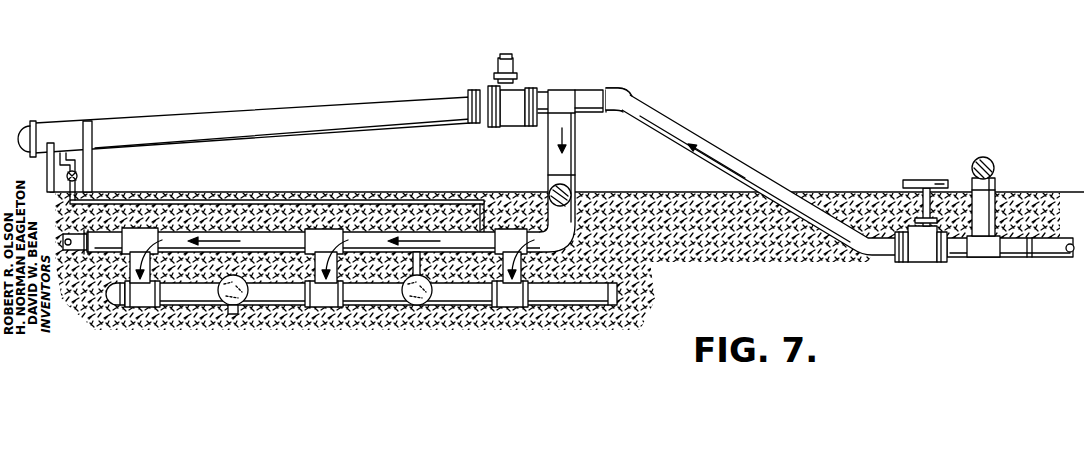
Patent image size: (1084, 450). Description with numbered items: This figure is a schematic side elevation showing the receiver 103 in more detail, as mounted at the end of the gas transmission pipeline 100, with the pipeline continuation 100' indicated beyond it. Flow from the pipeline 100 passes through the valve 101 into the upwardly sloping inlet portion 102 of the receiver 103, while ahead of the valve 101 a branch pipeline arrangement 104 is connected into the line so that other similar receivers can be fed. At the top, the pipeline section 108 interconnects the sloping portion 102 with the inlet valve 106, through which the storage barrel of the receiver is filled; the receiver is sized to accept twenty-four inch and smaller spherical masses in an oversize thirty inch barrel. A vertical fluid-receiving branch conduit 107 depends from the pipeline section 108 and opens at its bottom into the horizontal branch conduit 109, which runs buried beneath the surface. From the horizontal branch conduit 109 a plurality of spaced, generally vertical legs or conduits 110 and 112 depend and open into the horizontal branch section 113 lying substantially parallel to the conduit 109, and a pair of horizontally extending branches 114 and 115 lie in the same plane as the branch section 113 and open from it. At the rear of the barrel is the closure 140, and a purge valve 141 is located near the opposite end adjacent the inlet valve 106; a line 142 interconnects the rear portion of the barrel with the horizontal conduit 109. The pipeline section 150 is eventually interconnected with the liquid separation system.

The gas transmission pipeline 100 is at (1010, 272).
The water supply pipe (continuation) 100' is at (924, 7).
The valve 101 is at (925, 262).
The upwardly sloping inlet portion 102 is at (712, 140).
The receiver 103 is at (354, 89).
The branch pipeline arrangement 104 is at (998, 171).
The inlet valve 106 is at (515, 87).
The vertical fluid-receiving branch conduit 107 is at (578, 137).
The pipeline section 108 is at (618, 92).
The horizontal branch conduit 109 is at (278, 244).
The vertical leg conduit 110 is at (535, 283).
The vertical leg conduit 112 is at (130, 265).
The horizontal branch section 113 is at (342, 302).
The horizontally extending branch 114 is at (432, 302).
The horizontally extending branch 115 is at (238, 314).
The closure 140 is at (25, 125).
The purge valve 141 is at (78, 176).
The line 142 is at (152, 200).
The pipeline section 150 is at (571, 194).